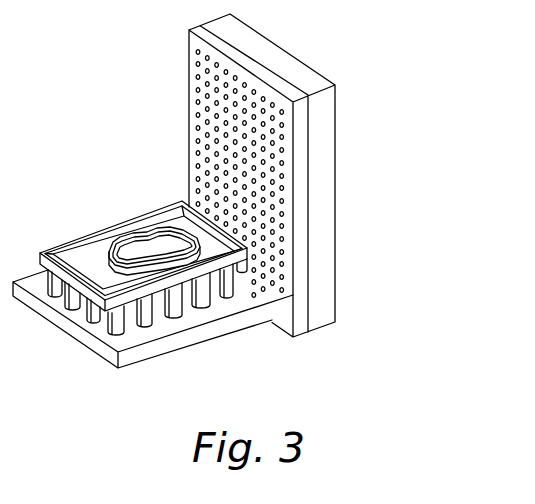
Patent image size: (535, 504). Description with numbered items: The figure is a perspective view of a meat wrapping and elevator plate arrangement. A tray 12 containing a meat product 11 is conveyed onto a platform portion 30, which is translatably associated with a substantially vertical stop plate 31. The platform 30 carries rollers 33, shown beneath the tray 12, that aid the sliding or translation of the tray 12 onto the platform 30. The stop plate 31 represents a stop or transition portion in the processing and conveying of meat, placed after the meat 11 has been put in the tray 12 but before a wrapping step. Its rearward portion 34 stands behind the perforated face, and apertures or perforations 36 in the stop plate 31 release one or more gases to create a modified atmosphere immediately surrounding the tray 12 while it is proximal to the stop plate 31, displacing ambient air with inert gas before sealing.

The meat product 11 is at (143, 237).
The tray 12 is at (92, 247).
The platform portion 30 is at (75, 332).
The stop plate 31 is at (367, 305).
The rollers 33 is at (208, 303).
The rearward portion 34 is at (320, 78).
The apertures or perforations 36 is at (283, 247).